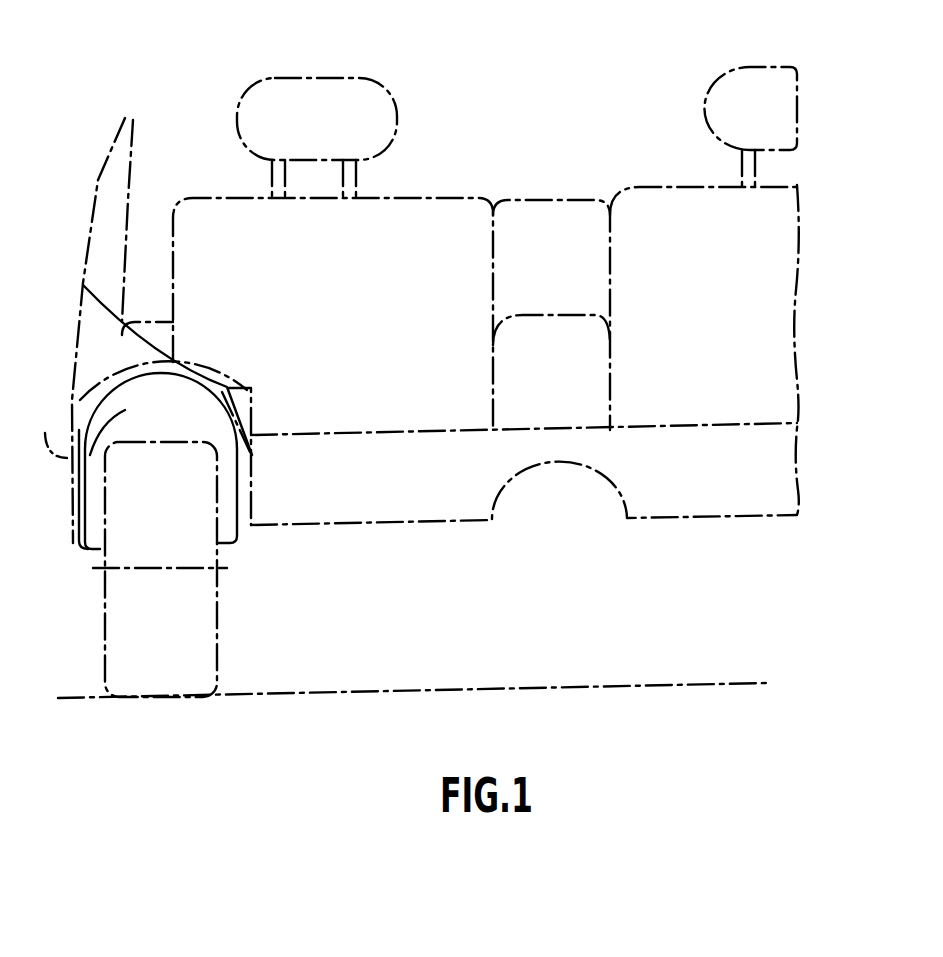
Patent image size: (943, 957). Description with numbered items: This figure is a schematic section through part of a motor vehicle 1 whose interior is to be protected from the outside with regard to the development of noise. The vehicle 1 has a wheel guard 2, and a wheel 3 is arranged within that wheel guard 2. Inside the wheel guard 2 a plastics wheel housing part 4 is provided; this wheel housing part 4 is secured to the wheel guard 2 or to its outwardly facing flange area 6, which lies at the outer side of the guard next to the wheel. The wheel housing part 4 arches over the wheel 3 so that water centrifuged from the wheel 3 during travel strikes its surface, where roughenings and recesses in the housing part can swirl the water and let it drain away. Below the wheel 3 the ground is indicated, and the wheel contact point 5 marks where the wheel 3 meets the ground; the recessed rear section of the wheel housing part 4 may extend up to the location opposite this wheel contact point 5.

The motor vehicle 1 is at (348, 301).
The wheel guard 2 is at (107, 378).
The wheel 3 is at (105, 627).
The wheel housing part 4 is at (112, 396).
The wheel contact point 5 is at (162, 697).
The flange area 6 is at (85, 430).